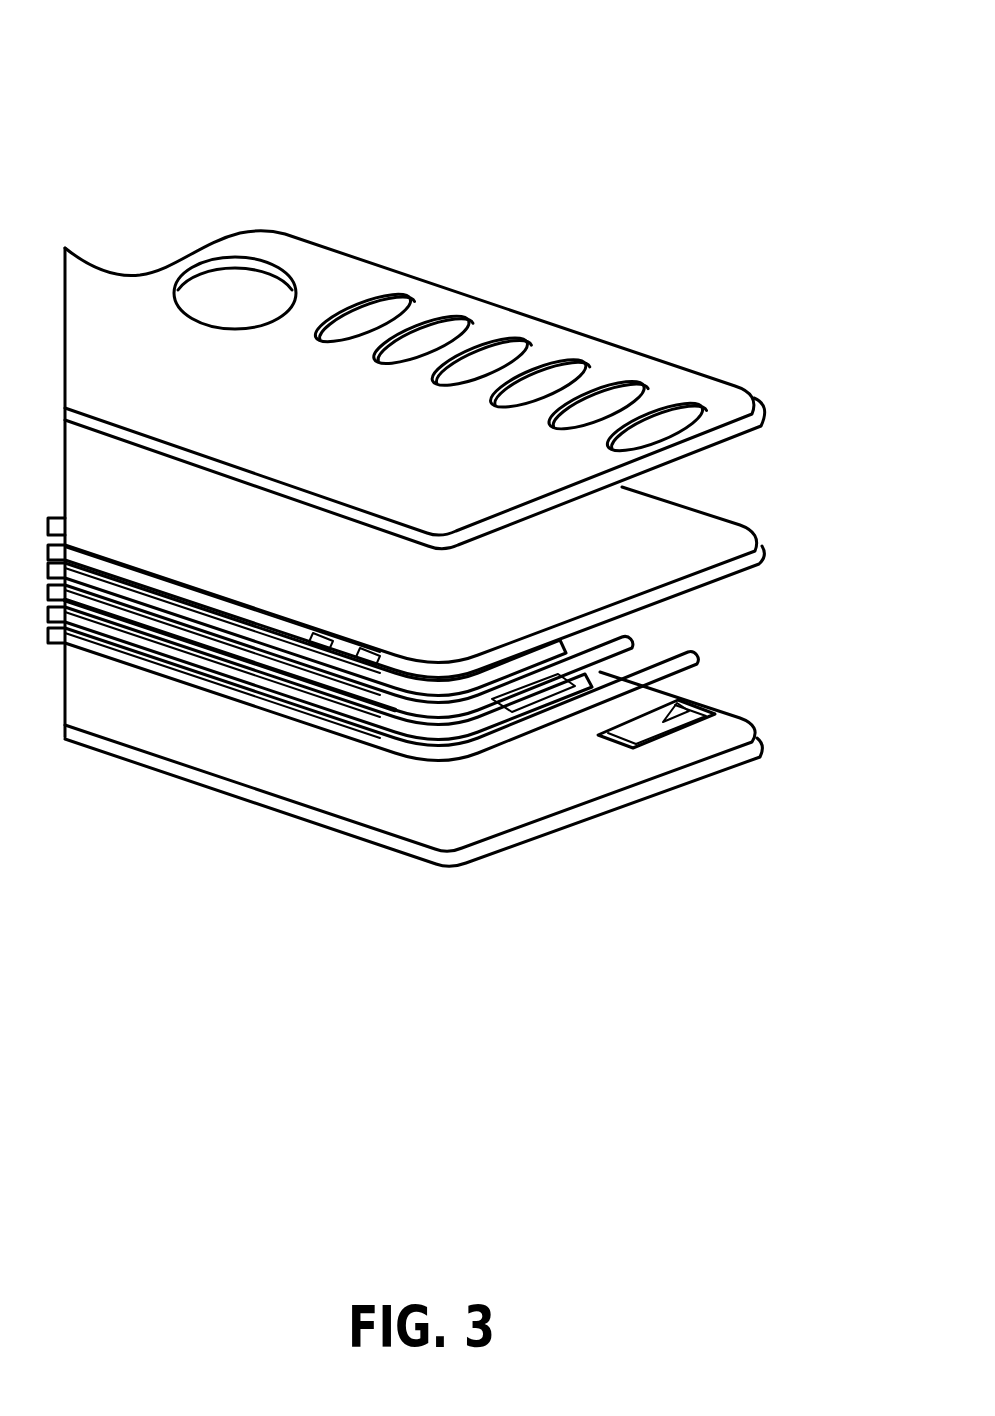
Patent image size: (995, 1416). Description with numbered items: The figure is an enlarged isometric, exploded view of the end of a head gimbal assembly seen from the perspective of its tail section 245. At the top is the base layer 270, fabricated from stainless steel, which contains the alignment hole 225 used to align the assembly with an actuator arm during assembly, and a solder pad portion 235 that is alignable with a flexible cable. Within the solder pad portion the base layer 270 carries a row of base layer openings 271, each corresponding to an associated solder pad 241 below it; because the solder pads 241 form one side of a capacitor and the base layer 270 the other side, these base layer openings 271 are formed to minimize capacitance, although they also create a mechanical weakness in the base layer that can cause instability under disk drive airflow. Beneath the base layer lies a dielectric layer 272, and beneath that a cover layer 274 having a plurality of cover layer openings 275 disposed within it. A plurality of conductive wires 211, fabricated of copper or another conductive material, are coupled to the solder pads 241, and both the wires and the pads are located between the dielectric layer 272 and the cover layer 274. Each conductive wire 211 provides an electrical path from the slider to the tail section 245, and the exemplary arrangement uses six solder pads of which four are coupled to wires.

The tail section 245 is at (108, 25).
The alignment hole 225 is at (209, 290).
The solder pad portion 235 is at (333, 271).
The base layer openings 271 is at (693, 425).
The base layer 270 is at (693, 446).
The dielectric layer 272 is at (740, 532).
The solder pad 241 is at (677, 657).
The cover layer openings 275 is at (663, 723).
The cover layer 274 is at (727, 752).
The conductive wire 211 is at (440, 755).